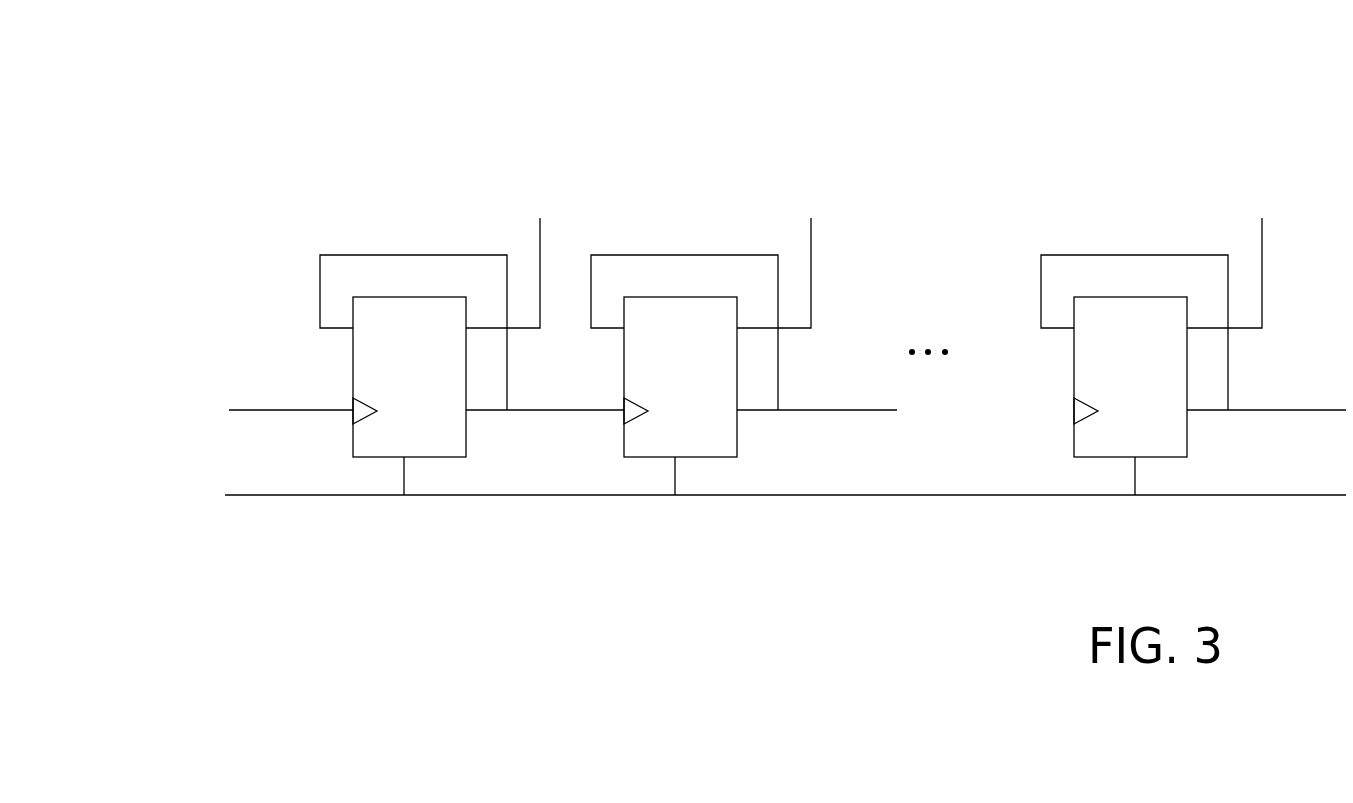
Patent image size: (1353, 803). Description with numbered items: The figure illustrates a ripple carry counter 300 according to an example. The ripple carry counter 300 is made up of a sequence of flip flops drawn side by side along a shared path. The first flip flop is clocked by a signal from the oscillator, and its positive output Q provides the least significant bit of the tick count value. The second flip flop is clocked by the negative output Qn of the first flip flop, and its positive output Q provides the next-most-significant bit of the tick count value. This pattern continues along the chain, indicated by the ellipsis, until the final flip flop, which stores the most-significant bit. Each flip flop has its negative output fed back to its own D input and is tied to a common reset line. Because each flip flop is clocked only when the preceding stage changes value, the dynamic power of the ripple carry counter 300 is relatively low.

The ripple carry counter 300 is at (503, 138).